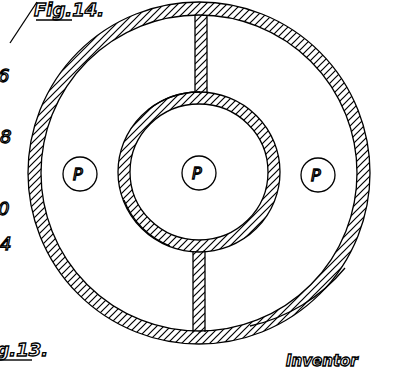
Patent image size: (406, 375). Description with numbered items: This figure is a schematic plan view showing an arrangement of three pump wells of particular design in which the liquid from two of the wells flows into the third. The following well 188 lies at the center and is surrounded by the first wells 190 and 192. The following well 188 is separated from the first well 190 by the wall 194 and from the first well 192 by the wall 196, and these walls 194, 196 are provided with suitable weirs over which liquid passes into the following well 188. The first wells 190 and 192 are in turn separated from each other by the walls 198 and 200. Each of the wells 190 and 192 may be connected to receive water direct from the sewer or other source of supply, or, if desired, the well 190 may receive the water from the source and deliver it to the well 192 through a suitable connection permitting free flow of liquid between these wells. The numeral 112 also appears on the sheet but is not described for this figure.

The container body 112 is at (333, 0).
The following well 188 is at (172, 126).
The first well 190 is at (148, 310).
The first well 192 is at (303, 270).
The wall 194 is at (134, 213).
The wall 196 is at (266, 141).
The wall 198 is at (197, 56).
The wall 200 is at (204, 292).